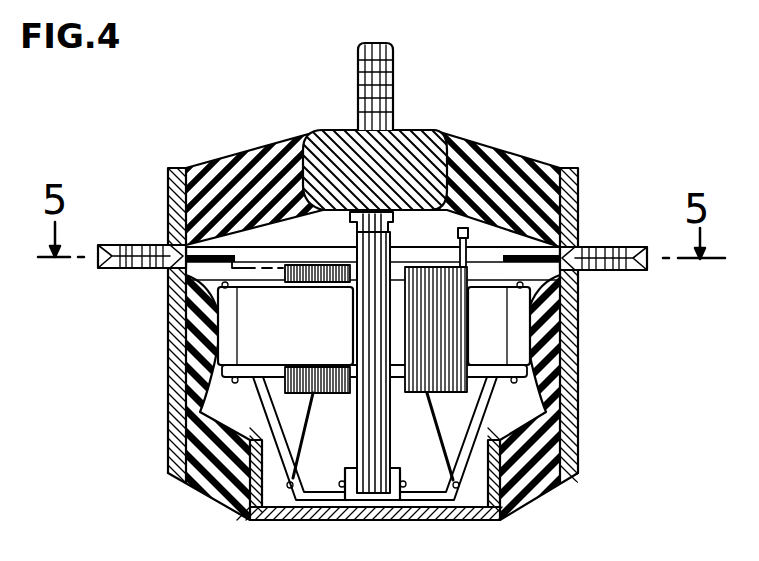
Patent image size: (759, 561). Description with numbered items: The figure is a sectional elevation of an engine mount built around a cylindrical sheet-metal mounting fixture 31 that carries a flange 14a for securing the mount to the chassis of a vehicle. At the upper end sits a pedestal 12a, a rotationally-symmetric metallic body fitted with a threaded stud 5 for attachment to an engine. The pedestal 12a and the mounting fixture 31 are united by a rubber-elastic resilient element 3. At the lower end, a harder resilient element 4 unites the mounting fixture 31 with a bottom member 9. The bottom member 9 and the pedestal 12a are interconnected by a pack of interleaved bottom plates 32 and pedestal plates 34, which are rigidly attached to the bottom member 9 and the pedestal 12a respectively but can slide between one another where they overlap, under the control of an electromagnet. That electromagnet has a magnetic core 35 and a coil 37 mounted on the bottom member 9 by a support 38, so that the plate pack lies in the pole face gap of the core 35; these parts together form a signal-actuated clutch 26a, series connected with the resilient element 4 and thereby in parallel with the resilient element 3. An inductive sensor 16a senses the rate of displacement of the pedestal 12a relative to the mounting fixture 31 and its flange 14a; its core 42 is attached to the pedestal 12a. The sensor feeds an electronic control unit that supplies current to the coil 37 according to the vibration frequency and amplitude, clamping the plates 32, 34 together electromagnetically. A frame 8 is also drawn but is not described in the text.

The resilient element 3 is at (485, 160).
The resilient element 4 is at (538, 480).
The threaded stud 5 is at (357, 84).
The frame 8 is at (260, 410).
The bottom member 9 is at (395, 520).
The pedestal 12a is at (415, 145).
The flange 14a is at (110, 268).
The inductive sensor 16a is at (448, 245).
The signal-actuated clutch 26a is at (208, 371).
The mounting fixture 31 is at (578, 221).
The bottom plates 32 is at (357, 450).
The pedestal plates 34 is at (355, 234).
The magnetic core 35 is at (304, 335).
The coil 37 is at (300, 262).
The support 38 is at (445, 488).
The core 42 is at (470, 250).